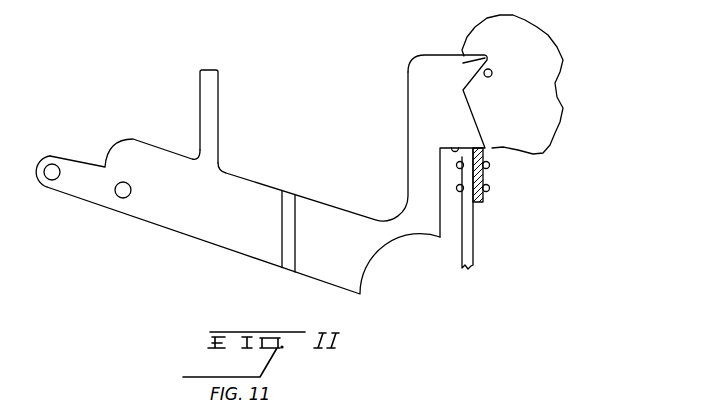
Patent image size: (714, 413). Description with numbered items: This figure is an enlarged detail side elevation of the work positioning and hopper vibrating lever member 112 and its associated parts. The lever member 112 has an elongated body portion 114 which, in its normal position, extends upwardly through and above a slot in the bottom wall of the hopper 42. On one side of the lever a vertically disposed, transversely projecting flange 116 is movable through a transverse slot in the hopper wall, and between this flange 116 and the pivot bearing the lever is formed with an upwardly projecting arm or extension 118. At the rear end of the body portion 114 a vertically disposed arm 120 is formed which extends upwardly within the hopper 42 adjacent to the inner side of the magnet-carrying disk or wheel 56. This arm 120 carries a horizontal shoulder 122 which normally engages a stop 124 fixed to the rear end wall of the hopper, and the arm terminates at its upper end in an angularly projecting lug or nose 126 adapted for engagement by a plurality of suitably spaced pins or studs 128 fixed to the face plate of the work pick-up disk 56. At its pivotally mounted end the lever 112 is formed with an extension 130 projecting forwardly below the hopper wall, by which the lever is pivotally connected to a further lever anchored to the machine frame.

The hopper 42 is at (466, 254).
The magnet-carrying disk or wheel 56 is at (543, 50).
The lever member 112 is at (140, 157).
The body portion 114 is at (312, 265).
The flange 116 is at (295, 222).
The arm or extension 118 is at (208, 92).
The arm 120 is at (420, 97).
The shoulder 122 is at (453, 147).
The stop 124 is at (483, 201).
The lug or nose 126 is at (463, 63).
The pins or studs 128 is at (492, 73).
The extension 130 is at (67, 162).